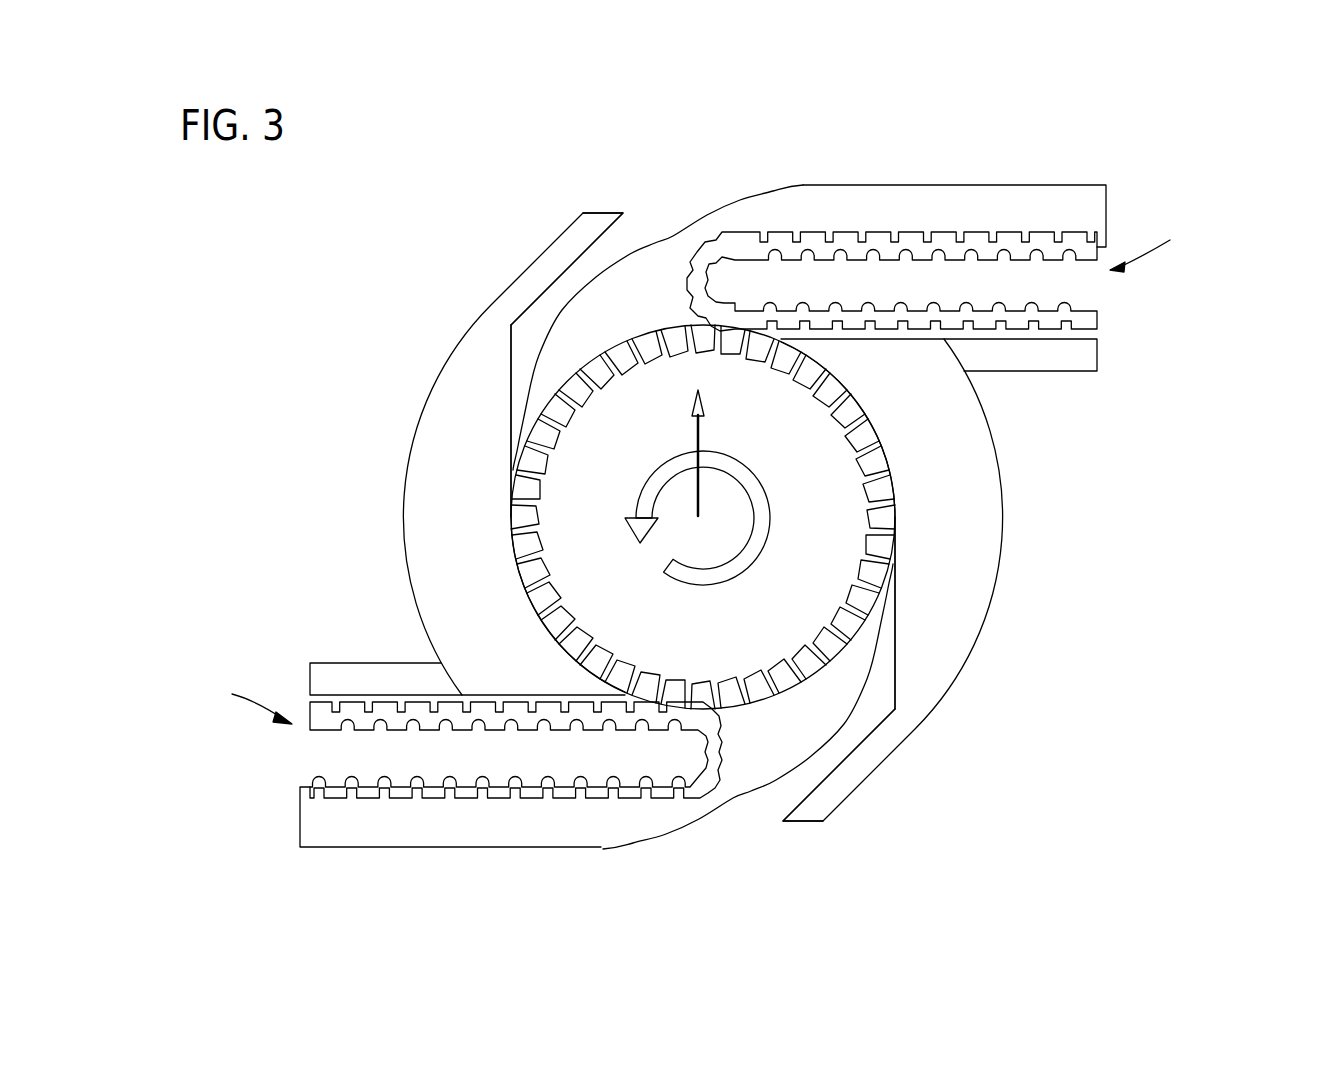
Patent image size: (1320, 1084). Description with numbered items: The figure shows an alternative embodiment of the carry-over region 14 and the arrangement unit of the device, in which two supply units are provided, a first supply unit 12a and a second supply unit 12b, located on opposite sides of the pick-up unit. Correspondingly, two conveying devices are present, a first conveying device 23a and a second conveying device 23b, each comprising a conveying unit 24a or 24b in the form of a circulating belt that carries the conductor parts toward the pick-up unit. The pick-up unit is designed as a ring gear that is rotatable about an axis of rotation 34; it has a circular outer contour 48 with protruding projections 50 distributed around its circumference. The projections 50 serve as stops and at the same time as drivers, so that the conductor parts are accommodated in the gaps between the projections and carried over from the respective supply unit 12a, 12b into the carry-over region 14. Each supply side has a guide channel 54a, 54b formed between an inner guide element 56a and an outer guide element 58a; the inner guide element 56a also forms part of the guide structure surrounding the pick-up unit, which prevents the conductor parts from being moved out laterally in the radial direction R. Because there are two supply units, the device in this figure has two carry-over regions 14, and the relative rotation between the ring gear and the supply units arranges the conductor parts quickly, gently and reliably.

The first supply unit 12a is at (295, 758).
The second supply unit 12b is at (963, 290).
The carry-over region 14 is at (703, 450).
The first conveying device 23a is at (238, 698).
The second conveying device 23b is at (1165, 245).
The conveying unit 24a is at (388, 710).
The conveying unit 24b is at (1058, 322).
The axis of rotation 34 is at (698, 518).
The circular outer contour 48 is at (540, 458).
The projections 50 is at (585, 607).
The guide channel 54a is at (905, 672).
The guide channel 54b is at (505, 358).
The inner guide element 56a is at (540, 378).
The outer guide element 58a is at (601, 213).
The radial direction R is at (704, 430).